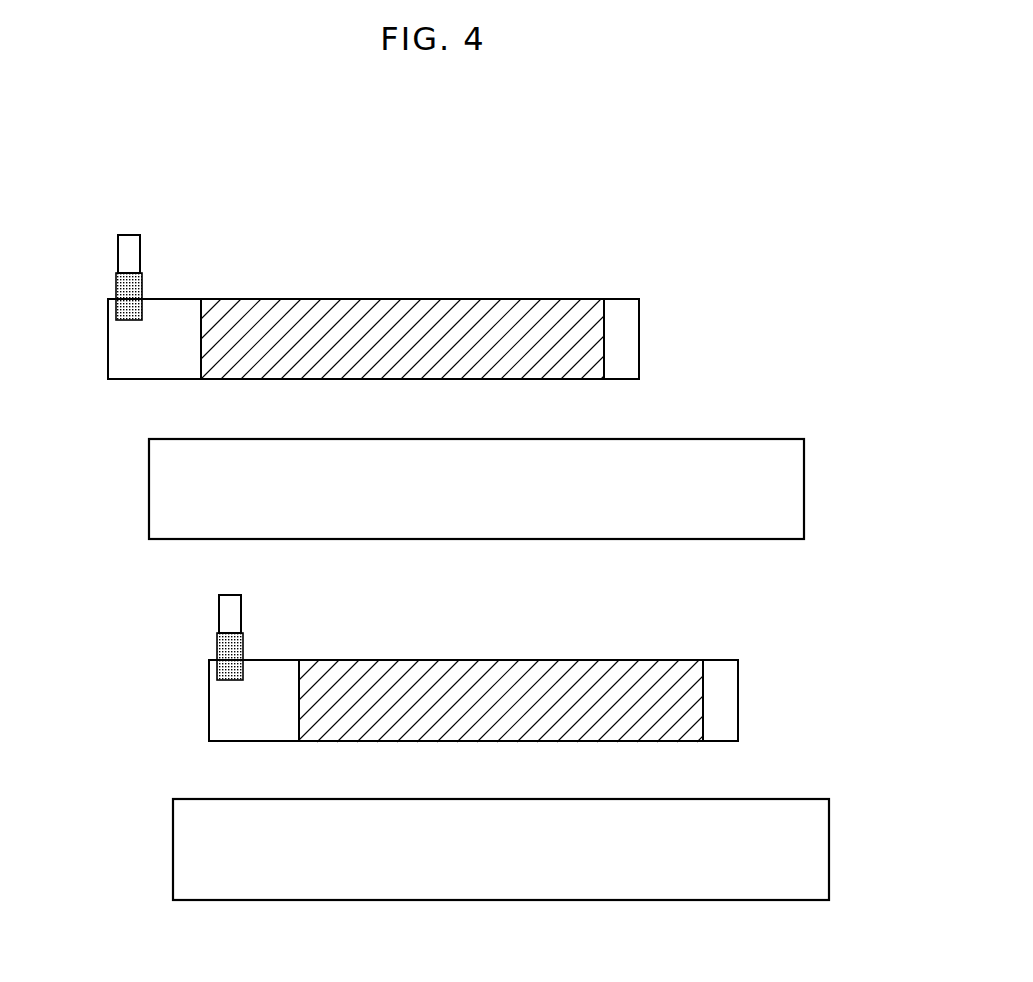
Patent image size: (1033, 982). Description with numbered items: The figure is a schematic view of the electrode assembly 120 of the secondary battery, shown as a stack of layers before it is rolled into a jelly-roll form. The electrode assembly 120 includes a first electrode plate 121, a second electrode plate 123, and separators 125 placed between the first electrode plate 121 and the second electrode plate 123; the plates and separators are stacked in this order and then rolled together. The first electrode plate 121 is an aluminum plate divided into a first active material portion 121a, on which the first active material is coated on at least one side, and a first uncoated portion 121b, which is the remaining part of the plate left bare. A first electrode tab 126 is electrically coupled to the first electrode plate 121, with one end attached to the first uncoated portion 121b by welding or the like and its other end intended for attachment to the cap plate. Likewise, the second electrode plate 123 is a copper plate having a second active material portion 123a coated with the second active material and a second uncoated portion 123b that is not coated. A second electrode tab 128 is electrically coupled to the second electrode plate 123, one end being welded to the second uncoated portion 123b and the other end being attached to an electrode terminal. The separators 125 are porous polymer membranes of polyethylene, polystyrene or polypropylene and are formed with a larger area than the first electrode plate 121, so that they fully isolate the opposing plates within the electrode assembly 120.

The electrode assembly 120 is at (702, 212).
The first electrode plate 121 is at (138, 388).
The first active material portion 121a is at (348, 310).
The first uncoated portion 121b is at (115, 344).
The first electrode tab 126 is at (120, 245).
The separator 125 is at (160, 484).
The second electrode plate 123 is at (188, 718).
The second active material portion 123a is at (490, 672).
The second uncoated portion 123b is at (223, 694).
The second electrode tab 128 is at (222, 614).